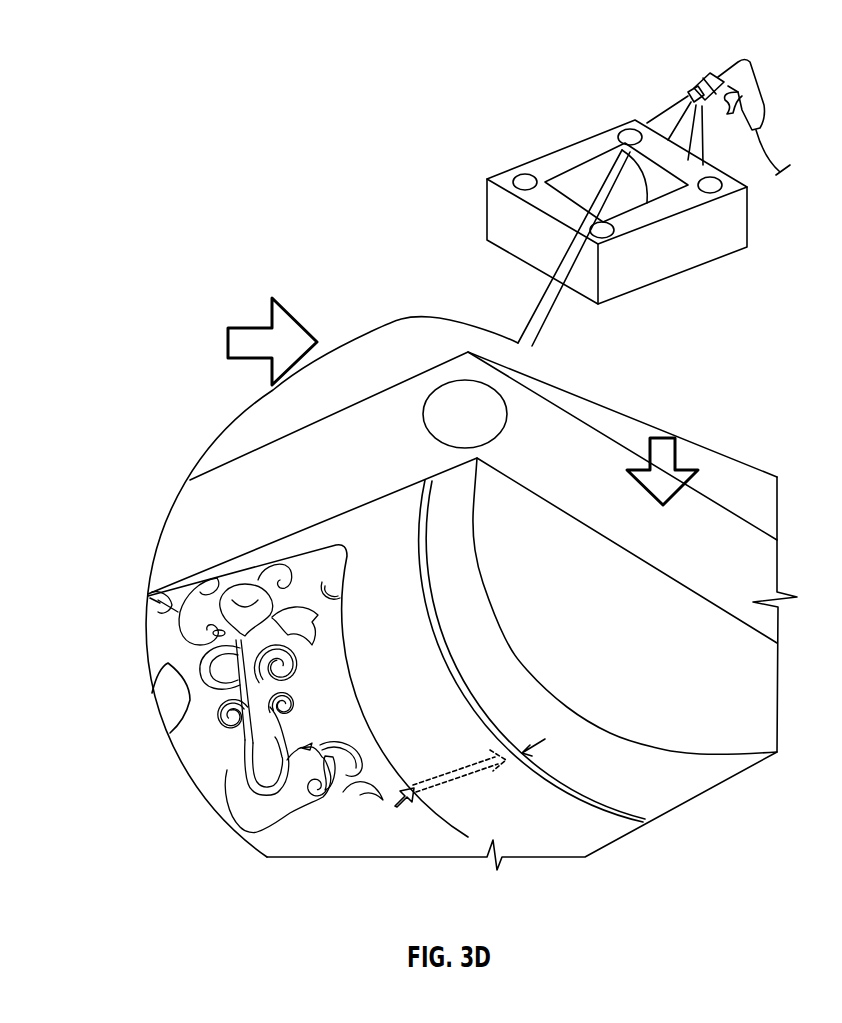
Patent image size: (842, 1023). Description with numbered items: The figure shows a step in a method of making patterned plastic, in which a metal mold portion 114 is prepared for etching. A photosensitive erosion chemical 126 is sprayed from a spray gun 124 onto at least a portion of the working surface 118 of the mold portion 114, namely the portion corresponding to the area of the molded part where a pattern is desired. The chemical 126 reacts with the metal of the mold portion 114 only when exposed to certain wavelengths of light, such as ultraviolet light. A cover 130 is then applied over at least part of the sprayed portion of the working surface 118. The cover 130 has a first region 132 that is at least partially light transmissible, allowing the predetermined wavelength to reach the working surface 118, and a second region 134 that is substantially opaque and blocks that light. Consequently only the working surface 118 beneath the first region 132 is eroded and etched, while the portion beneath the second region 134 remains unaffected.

The mold portion 114 is at (377, 413).
The working surface 118 is at (433, 716).
The spray gun 124 is at (735, 62).
The photosensitive erosion chemical 126 is at (665, 110).
The cover 130 is at (150, 691).
The first region 132 is at (257, 573).
The second region 134 is at (157, 648).